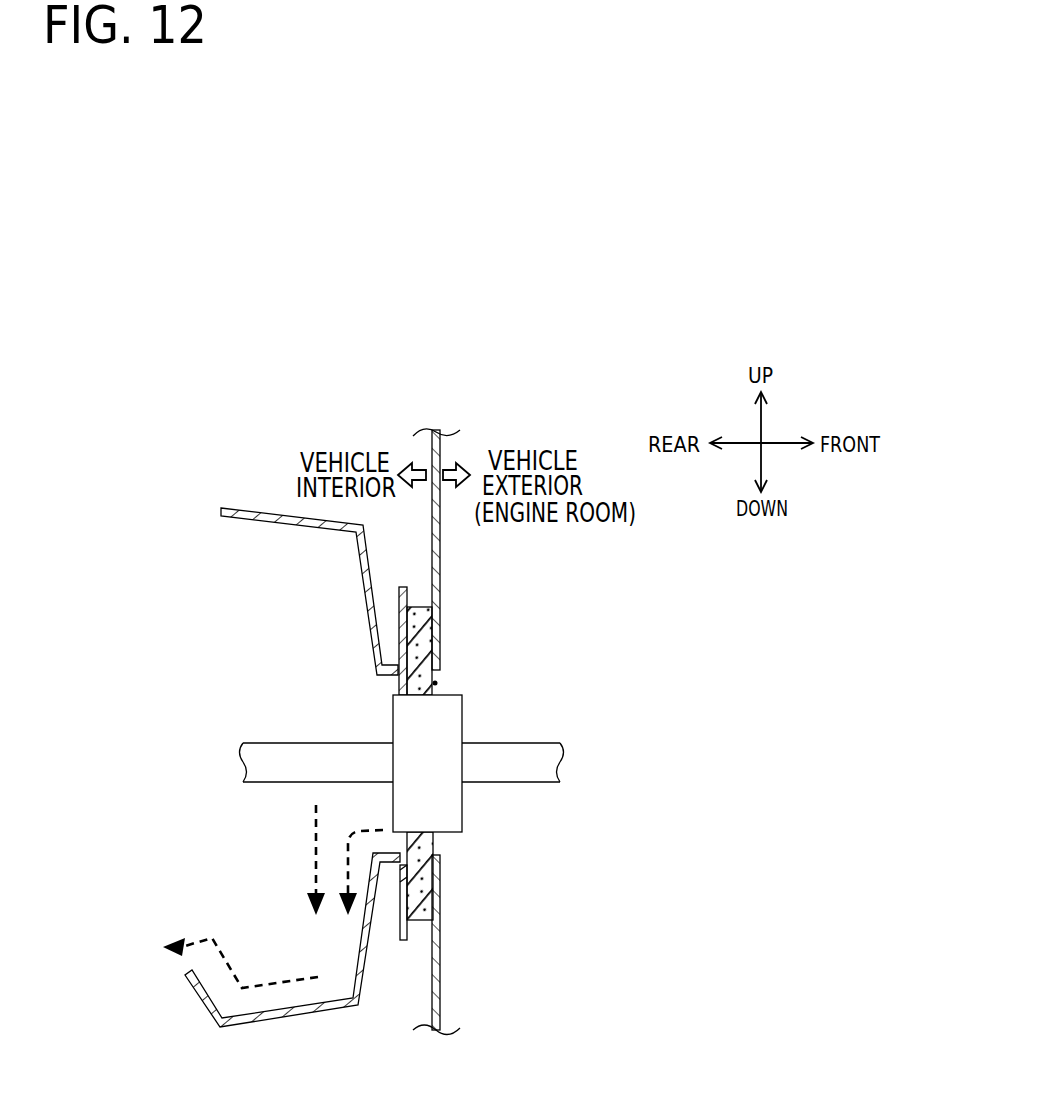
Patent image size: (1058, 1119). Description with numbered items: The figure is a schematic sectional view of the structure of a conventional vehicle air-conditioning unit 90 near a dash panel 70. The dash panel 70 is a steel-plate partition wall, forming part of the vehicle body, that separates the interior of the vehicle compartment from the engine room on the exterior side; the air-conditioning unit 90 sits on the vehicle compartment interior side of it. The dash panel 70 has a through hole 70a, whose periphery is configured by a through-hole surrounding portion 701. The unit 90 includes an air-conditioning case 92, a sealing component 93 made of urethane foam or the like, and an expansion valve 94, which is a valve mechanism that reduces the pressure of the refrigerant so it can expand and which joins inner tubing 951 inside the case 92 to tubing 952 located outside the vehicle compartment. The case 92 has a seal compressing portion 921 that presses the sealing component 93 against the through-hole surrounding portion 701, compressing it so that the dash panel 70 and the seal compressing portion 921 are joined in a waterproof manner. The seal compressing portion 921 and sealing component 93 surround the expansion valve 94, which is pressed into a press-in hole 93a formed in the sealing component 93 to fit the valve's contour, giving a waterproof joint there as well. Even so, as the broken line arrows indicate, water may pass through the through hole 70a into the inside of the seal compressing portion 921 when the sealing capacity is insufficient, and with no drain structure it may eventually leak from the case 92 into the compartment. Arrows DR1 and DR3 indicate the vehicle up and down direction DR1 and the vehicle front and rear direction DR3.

The dash panel 70 is at (440, 539).
The through-hole surrounding portion 701 is at (433, 623).
The through hole 70a is at (437, 683).
The vehicle air-conditioning unit 90 is at (283, 487).
The air-conditioning case 92 is at (250, 510).
The seal compressing portion 921 is at (397, 922).
The sealing component 93 is at (417, 605).
The press-in hole 93a is at (418, 832).
The expansion valve 94 is at (443, 797).
The inner tubing 951 is at (280, 758).
The tubing 952 is at (528, 753).
The vehicle up and down direction DR1 is at (761, 421).
The vehicle front and rear direction DR3 is at (775, 443).